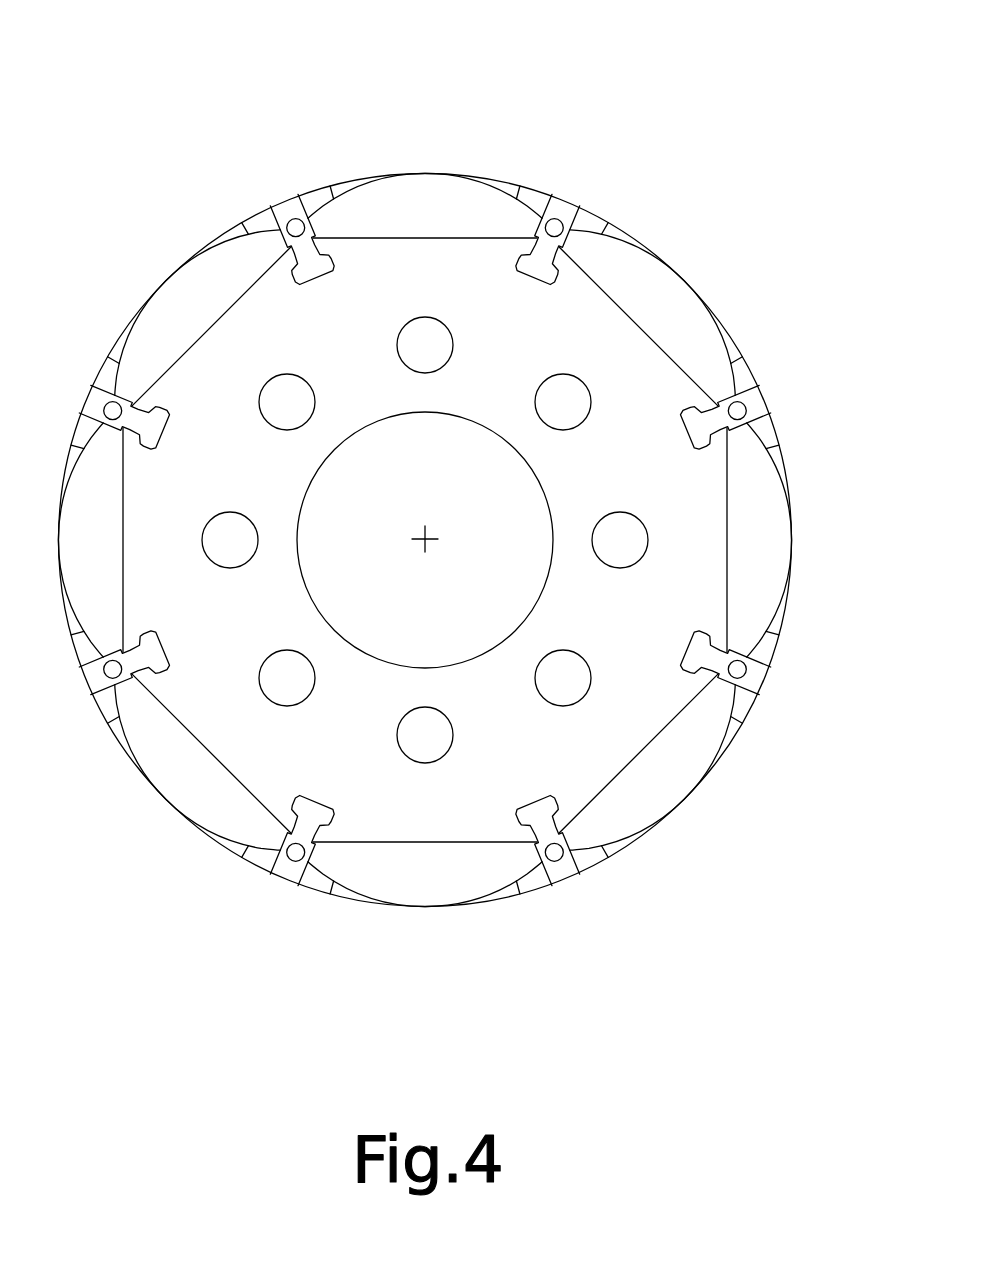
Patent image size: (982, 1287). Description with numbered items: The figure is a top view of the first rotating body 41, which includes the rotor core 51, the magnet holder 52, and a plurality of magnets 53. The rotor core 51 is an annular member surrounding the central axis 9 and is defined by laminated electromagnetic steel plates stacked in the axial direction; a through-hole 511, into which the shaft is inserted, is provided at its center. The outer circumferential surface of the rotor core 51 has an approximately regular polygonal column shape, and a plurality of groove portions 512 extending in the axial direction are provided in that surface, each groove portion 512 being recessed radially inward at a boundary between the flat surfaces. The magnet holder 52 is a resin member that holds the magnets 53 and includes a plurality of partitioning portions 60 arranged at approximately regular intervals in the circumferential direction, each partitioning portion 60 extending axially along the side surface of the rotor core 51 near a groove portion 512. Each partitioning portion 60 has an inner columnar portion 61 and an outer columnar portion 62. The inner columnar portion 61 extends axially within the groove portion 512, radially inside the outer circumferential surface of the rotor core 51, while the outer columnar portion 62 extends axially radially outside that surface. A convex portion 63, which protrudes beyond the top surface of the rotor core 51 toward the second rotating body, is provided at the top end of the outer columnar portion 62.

The first rotating body 41 is at (305, 137).
The central axis 9 is at (413, 530).
The rotor core 51 is at (423, 277).
The through-hole 511 is at (505, 497).
The groove portion 512 is at (303, 805).
The magnet holder 52 is at (775, 692).
The magnet 53 is at (768, 533).
The partitioning portion 60 is at (424, 612).
The inner columnar portion 61 is at (545, 808).
The outer columnar portion 62 is at (537, 848).
The convex portion 63 is at (293, 860).